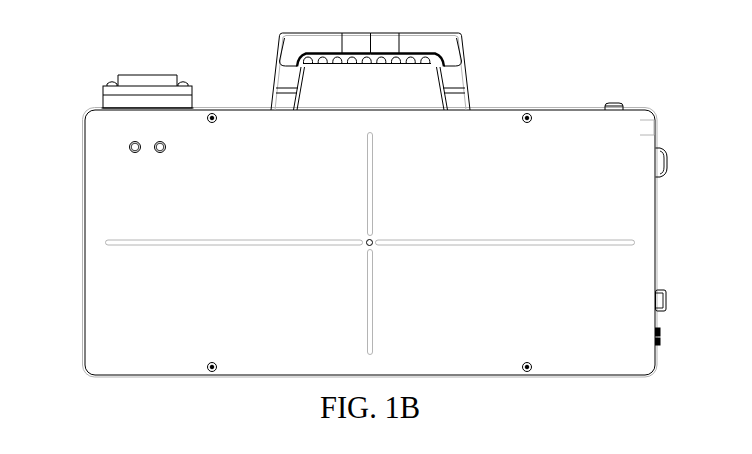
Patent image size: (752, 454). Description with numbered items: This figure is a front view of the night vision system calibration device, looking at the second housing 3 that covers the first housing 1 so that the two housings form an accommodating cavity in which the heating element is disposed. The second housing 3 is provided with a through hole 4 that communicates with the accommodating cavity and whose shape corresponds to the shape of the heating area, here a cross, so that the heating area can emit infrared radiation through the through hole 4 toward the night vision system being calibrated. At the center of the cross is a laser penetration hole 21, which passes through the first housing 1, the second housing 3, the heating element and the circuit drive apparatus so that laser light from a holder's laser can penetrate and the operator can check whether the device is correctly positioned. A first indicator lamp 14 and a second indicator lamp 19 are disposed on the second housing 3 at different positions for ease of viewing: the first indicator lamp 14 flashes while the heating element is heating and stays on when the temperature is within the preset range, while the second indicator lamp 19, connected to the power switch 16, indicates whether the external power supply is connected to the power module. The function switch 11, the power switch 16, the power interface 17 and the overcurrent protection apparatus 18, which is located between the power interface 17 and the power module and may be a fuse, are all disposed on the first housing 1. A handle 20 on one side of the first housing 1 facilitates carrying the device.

The first housing 1 is at (549, 108).
The second housing 3 is at (644, 134).
The through hole 4 is at (634, 242).
The function switch 11 is at (614, 102).
The first indicator lamp 14 is at (164, 143).
The power switch 16 is at (668, 149).
The power interface 17 is at (661, 333).
The overcurrent protection apparatus 18 is at (667, 301).
The second indicator lamp 19 is at (131, 143).
The handle 20 is at (421, 34).
The laser penetration hole 21 is at (373, 238).